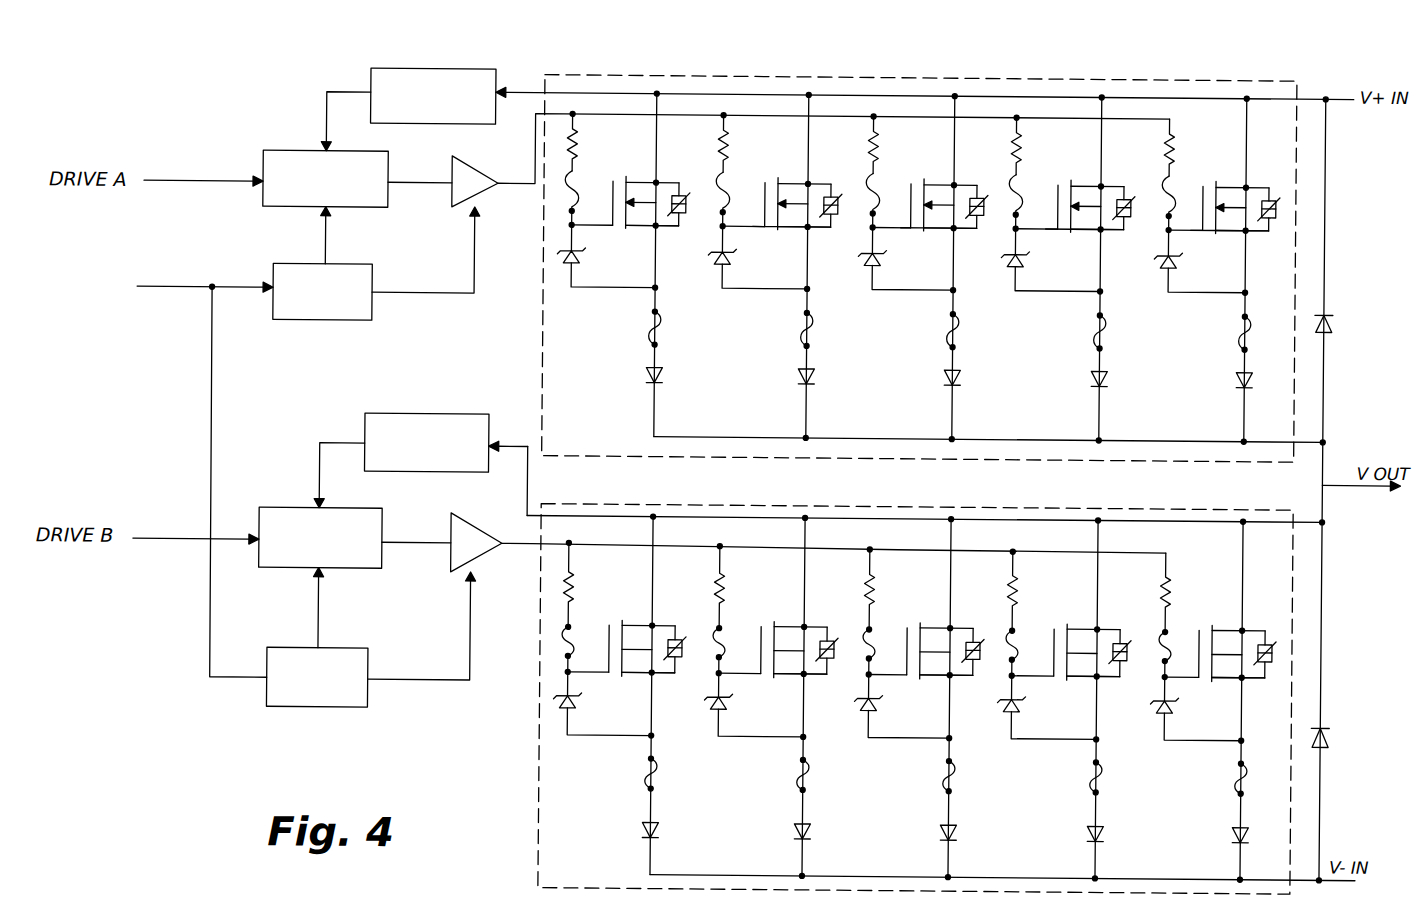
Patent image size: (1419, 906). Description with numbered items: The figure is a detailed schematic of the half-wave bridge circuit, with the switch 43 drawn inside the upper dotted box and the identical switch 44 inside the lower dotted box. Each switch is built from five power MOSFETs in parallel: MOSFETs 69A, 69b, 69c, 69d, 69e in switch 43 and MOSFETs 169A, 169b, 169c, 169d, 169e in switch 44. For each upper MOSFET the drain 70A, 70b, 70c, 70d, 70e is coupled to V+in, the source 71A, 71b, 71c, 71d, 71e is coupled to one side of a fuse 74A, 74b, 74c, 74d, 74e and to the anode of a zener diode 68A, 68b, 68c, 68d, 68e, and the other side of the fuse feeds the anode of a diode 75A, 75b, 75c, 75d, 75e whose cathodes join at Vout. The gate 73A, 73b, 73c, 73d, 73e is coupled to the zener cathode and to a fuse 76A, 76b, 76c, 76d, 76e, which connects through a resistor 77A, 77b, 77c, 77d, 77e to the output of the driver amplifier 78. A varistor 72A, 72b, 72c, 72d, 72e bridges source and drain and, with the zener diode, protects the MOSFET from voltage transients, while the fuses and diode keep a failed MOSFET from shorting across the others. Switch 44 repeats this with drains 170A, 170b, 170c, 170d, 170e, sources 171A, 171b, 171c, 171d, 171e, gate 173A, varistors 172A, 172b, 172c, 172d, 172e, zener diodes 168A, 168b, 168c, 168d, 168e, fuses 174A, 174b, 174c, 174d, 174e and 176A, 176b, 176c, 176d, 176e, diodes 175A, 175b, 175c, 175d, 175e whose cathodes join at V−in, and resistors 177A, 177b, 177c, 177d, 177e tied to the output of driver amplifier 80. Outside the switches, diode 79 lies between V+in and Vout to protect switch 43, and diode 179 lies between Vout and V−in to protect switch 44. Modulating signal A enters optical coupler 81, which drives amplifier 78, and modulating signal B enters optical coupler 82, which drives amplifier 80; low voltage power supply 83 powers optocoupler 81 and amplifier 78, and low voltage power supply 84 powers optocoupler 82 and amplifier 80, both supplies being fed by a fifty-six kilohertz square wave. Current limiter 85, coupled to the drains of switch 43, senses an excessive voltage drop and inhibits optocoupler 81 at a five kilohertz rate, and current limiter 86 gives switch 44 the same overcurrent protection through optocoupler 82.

The switch 43 is at (540, 316).
The switch 44 is at (538, 730).
The driver amplifier 78 is at (477, 170).
The diode 79 is at (1332, 320).
The driver amplifier 80 is at (486, 558).
The optical coupler 81 is at (372, 210).
The optical coupler 82 is at (365, 571).
The low voltage power supply 83 is at (367, 323).
The low voltage power supply 84 is at (355, 710).
The current limiter 85 is at (468, 71).
The current limiter 86 is at (463, 416).
The diode 179 is at (1332, 735).
The zener diode 68A is at (563, 270).
The zener diode 68b is at (714, 270).
The zener diode 68c is at (866, 270).
The zener diode 68d is at (1010, 270).
The zener diode 68e is at (1163, 270).
The MOSFET 69A is at (680, 230).
The MOSFET 69b is at (831, 228).
The MOSFET 69c is at (972, 228).
The MOSFET 69d is at (1119, 228).
The MOSFET 69e is at (1266, 228).
The drain 70A is at (642, 180).
The drain 70b is at (794, 180).
The drain 70c is at (940, 180).
The drain 70d is at (1087, 180).
The drain 70e is at (1232, 180).
The source 71A is at (627, 230).
The source 71b is at (789, 228).
The source 71c is at (938, 230).
The source 71d is at (1084, 230).
The source 71e is at (1236, 230).
The varistor 72A is at (683, 195).
The varistor 72b is at (835, 195).
The varistor 72c is at (981, 195).
The varistor 72d is at (1128, 195).
The varistor 72e is at (1273, 195).
The gate 73A is at (588, 222).
The gate 73b is at (767, 228).
The gate 73c is at (915, 228).
The gate 73d is at (1060, 228).
The gate 73e is at (1205, 228).
The fuse 74A is at (663, 325).
The fuse 74b is at (813, 323).
The fuse 74c is at (959, 323).
The fuse 74d is at (1106, 323).
The fuse 74e is at (1251, 323).
The diode 75A is at (665, 383).
The diode 75b is at (817, 384).
The diode 75c is at (963, 384).
The diode 75d is at (1110, 384).
The diode 75e is at (1253, 384).
The fuse 76A is at (573, 190).
The fuse 76b is at (724, 190).
The fuse 76c is at (874, 190).
The fuse 76d is at (1017, 190).
The fuse 76e is at (1170, 190).
The resistor 77A is at (574, 150).
The resistor 77b is at (725, 150).
The resistor 77c is at (875, 150).
The resistor 77d is at (1018, 150).
The resistor 77e is at (1171, 150).
The zener diode 168A is at (567, 717).
The zener diode 168b is at (718, 717).
The zener diode 168c is at (868, 717).
The zener diode 168d is at (1011, 717).
The zener diode 168e is at (1164, 717).
The MOSFET 169A is at (680, 676).
The MOSFET 169b is at (832, 676).
The MOSFET 169c is at (978, 676).
The MOSFET 169d is at (1125, 676).
The MOSFET 169e is at (1270, 676).
The drain 170A is at (643, 626).
The drain 170b is at (795, 626).
The drain 170c is at (941, 626).
The drain 170d is at (1088, 626).
The drain 170e is at (1233, 626).
The source 171A is at (633, 676).
The source 171b is at (785, 676).
The source 171c is at (931, 676).
The source 171d is at (1078, 676).
The source 171e is at (1223, 676).
The varistor 172A is at (684, 640).
The varistor 172b is at (836, 640).
The varistor 172c is at (982, 640).
The varistor 172d is at (1129, 640).
The varistor 172e is at (1274, 640).
The gate 173A is at (579, 673).
The fuse 174A is at (658, 771).
The fuse 174b is at (810, 771).
The fuse 174c is at (956, 771).
The fuse 174d is at (1103, 771).
The fuse 174e is at (1242, 777).
The diode 175A is at (663, 831).
The diode 175b is at (815, 831).
The diode 175c is at (961, 831).
The diode 175d is at (1108, 831).
The diode 175e is at (1238, 831).
The fuse 176A is at (572, 636).
The fuse 176b is at (723, 636).
The fuse 176c is at (873, 636).
The fuse 176d is at (1016, 636).
The fuse 176e is at (1169, 636).
The resistor 177A is at (574, 593).
The resistor 177b is at (725, 593).
The resistor 177c is at (875, 593).
The resistor 177d is at (1018, 593).
The resistor 177e is at (1171, 593).